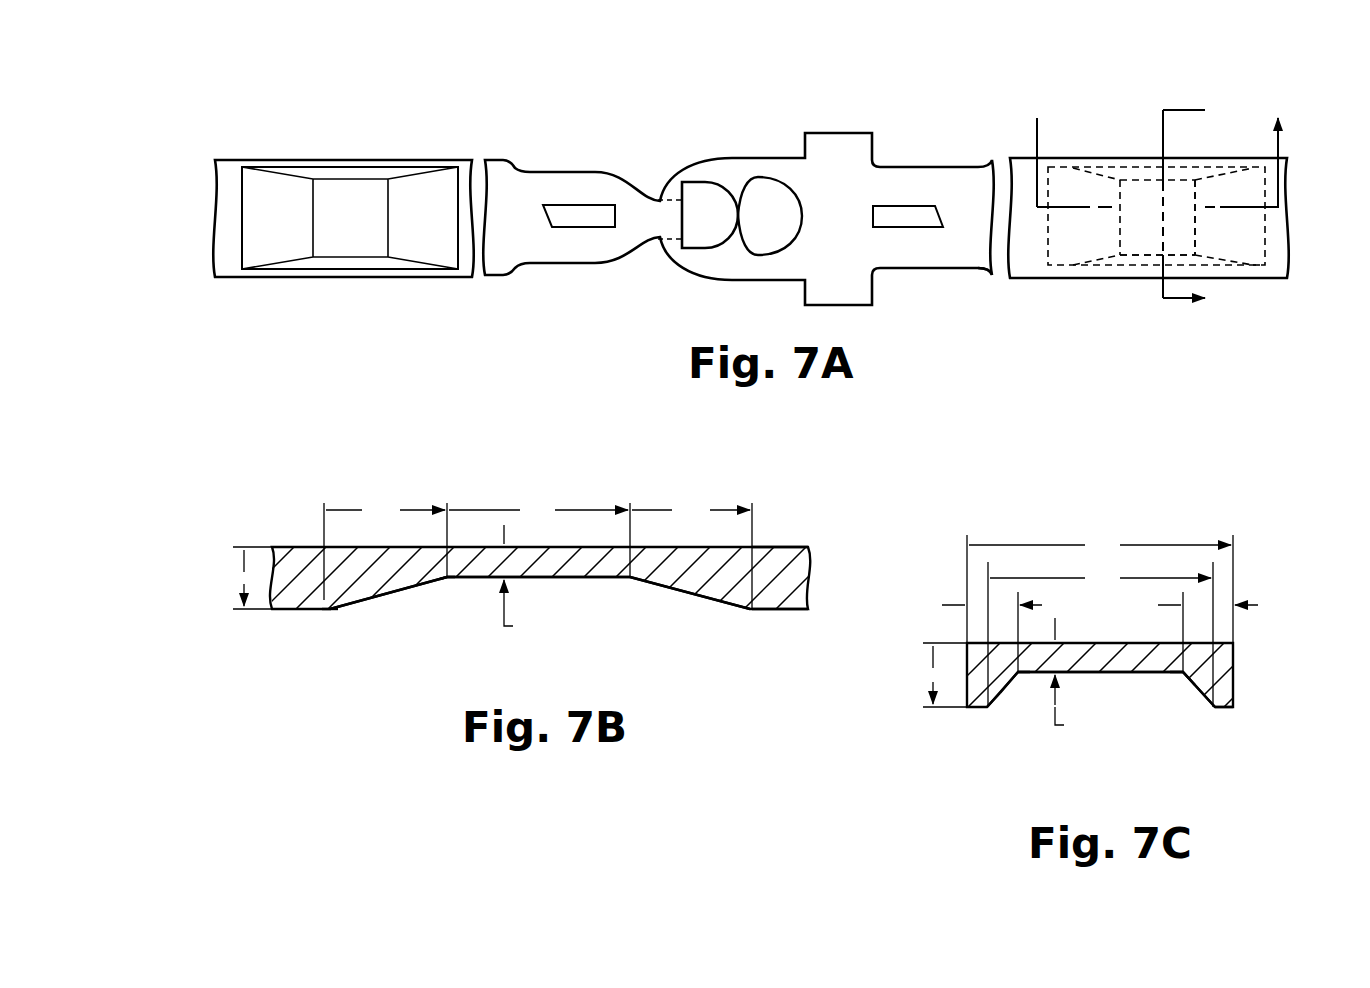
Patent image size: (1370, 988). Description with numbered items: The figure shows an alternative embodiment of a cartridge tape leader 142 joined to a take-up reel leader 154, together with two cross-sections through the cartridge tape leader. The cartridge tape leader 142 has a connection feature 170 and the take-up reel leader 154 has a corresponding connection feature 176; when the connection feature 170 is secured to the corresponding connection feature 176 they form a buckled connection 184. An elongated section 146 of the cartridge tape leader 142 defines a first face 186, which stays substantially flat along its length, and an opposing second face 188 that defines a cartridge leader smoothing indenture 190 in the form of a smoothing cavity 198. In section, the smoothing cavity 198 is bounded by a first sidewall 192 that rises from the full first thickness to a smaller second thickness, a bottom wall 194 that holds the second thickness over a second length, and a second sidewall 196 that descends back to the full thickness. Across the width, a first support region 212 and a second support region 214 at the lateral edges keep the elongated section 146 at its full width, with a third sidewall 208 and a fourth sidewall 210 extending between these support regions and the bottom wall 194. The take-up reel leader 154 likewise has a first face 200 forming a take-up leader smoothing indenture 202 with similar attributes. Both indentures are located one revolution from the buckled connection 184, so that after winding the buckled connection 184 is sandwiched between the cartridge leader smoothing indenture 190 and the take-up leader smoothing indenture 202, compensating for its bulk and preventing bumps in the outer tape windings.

In FIG. 7A, the cartridge tape leader 142 is at (943, 88).
In FIG. 7A, the elongated section 146 is at (1063, 314).
In FIG. 7A, the take-up reel leader 154 is at (482, 96).
In FIG. 7A, the connection feature 170 is at (759, 168).
In FIG. 7A, the corresponding connection feature 176 is at (660, 200).
In FIG. 7A, the buckled connection 184 is at (686, 160).
In FIG. 7A, the first face 186 is at (988, 270).
In FIG. 7B, the first face 186 is at (783, 547).
In FIG. 7B, the second face 188 is at (780, 609).
In FIG. 7A, the cartridge leader smoothing indenture 190 is at (1119, 145).
In FIG. 7B, the cartridge leader smoothing indenture 190 is at (655, 667).
In FIG. 7C, the cartridge leader smoothing indenture 190 is at (1112, 734).
In FIG. 7A, the first sidewall 192 is at (1050, 256).
In FIG. 7B, the first sidewall 192 is at (383, 597).
In FIG. 7A, the bottom wall 194 is at (1122, 238).
In FIG. 7B, the bottom wall 194 is at (580, 578).
In FIG. 7C, the bottom wall 194 is at (1152, 675).
In FIG. 7A, the second sidewall 196 is at (1245, 240).
In FIG. 7B, the second sidewall 196 is at (697, 595).
In FIG. 7C, the second sidewall 196 is at (1178, 700).
In FIG. 7A, the smoothing cavity 198 is at (1100, 145).
In FIG. 7A, the first face 200 is at (344, 148).
In FIG. 7A, the take-up leader smoothing indenture 202 is at (345, 250).
In FIG. 7A, the third sidewall 208 is at (1190, 165).
In FIG. 7B, the third sidewall 208 is at (441, 603).
In FIG. 7C, the third sidewall 208 is at (1010, 687).
In FIG. 7A, the fourth sidewall 210 is at (1146, 262).
In FIG. 7C, the fourth sidewall 210 is at (1182, 690).
In FIG. 7A, the first support region 212 is at (1072, 168).
In FIG. 7B, the first support region 212 is at (470, 612).
In FIG. 7C, the first support region 212 is at (986, 706).
In FIG. 7A, the second support region 214 is at (1262, 268).
In FIG. 7C, the second support region 214 is at (1226, 710).